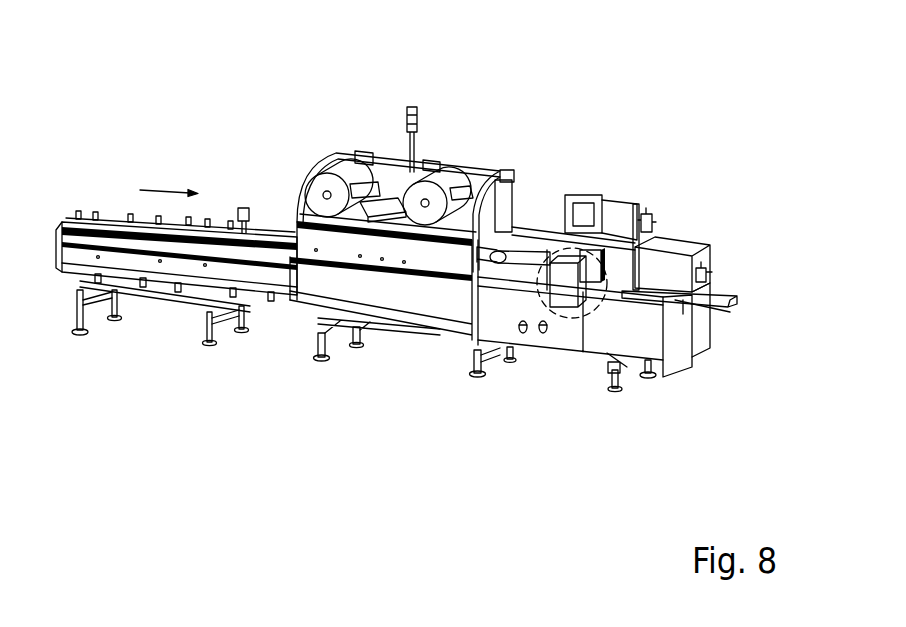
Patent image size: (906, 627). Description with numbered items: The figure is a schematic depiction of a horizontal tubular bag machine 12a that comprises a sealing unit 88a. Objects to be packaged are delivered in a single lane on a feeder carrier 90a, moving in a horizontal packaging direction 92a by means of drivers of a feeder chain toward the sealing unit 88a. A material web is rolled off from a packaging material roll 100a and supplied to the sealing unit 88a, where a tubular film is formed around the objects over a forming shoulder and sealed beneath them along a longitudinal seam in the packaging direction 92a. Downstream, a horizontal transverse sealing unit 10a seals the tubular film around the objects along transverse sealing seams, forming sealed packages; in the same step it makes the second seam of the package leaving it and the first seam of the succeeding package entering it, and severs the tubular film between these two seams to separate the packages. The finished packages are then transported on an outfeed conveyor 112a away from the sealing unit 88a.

The horizontal tubular bag machine 12a is at (160, 118).
The horizontal packaging direction 92a is at (165, 192).
The feeder carrier 90a is at (70, 260).
The packaging material roll 100a is at (448, 182).
The horizontal transverse sealing unit 10a is at (615, 268).
The sealing unit 88a is at (507, 309).
The outfeed conveyor 112a is at (735, 293).